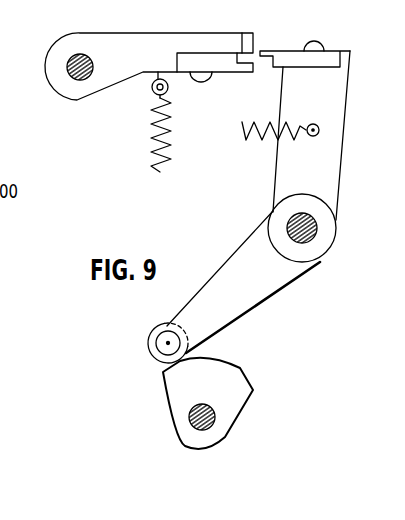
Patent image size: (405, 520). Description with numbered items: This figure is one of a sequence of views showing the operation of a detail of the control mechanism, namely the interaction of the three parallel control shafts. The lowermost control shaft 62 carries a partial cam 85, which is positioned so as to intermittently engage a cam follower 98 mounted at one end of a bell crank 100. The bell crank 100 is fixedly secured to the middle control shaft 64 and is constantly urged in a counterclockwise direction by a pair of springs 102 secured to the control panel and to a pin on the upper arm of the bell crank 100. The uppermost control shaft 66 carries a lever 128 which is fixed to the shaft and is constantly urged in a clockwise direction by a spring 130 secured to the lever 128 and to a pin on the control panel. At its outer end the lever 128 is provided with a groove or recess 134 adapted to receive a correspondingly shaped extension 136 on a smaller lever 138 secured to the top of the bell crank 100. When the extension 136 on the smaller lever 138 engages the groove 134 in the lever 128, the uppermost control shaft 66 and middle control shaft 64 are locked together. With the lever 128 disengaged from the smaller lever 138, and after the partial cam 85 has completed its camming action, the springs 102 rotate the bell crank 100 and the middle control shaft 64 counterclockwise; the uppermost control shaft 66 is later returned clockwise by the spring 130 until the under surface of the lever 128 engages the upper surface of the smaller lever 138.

The uppermost control shaft 66 is at (70, 82).
The lever 128 is at (123, 73).
The spring 130 is at (155, 148).
The groove or recess 134 is at (245, 36).
The extension 136 is at (266, 50).
The smaller lever 138 is at (307, 58).
The springs 102 is at (256, 143).
The bell crank 100 is at (330, 176).
The middle control shaft 64 is at (312, 240).
The cam follower 98 is at (150, 345).
The partial cam 85 is at (222, 377).
The lowermost control shaft 62 is at (208, 422).